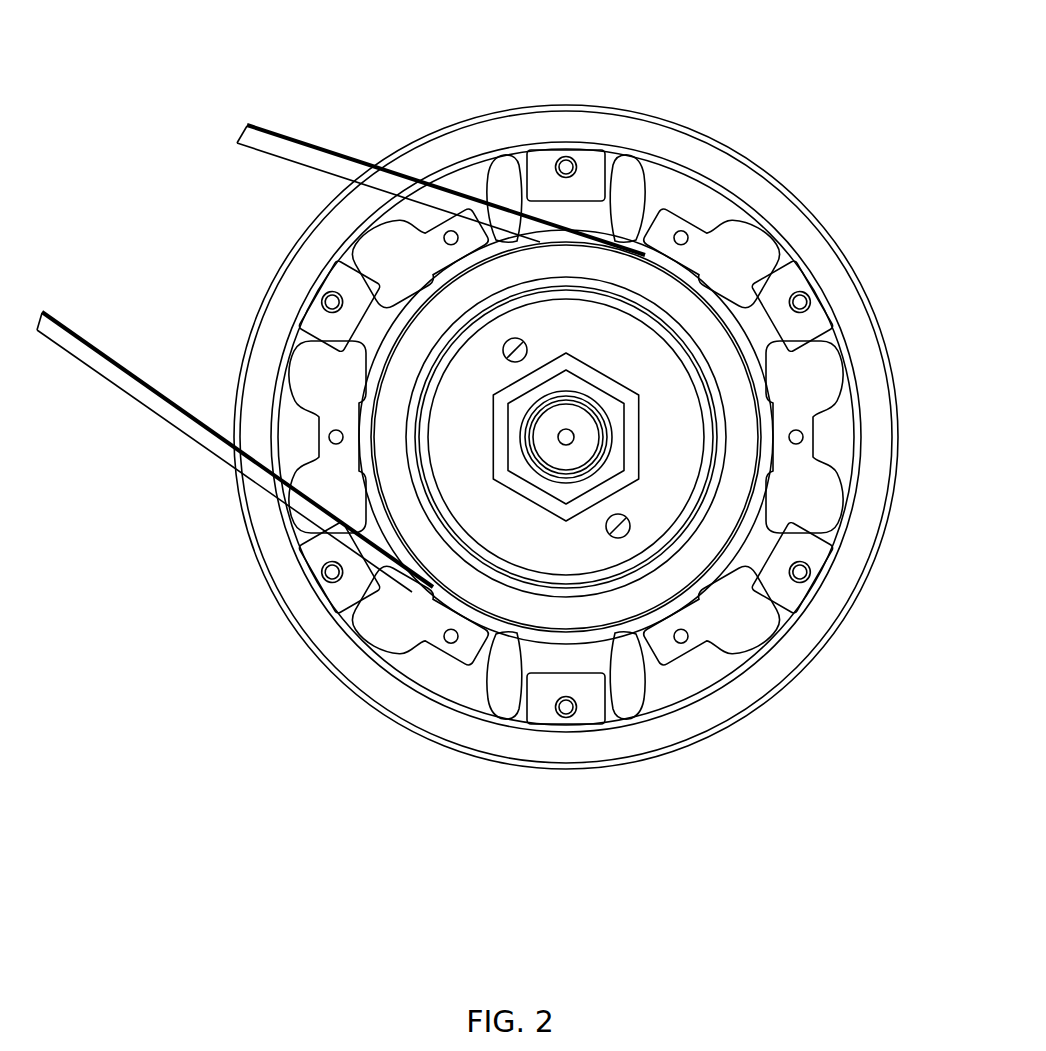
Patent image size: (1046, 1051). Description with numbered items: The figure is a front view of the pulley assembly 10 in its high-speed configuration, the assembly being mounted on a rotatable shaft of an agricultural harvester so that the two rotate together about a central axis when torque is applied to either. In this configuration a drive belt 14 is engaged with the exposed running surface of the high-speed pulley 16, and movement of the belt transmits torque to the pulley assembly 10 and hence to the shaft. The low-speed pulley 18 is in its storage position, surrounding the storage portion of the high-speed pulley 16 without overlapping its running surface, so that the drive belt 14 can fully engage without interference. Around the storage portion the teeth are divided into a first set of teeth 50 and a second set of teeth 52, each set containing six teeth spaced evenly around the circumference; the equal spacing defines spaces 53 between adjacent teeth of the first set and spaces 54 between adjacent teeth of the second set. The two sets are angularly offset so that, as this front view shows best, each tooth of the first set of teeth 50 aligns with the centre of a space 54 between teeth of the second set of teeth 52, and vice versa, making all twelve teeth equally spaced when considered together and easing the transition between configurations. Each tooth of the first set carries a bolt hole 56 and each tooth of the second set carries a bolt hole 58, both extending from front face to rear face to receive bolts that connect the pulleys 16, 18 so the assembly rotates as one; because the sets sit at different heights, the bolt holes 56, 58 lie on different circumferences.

The pulley assembly 10 is at (758, 98).
The drive belt 14 is at (310, 153).
The high-speed pulley 16 is at (515, 606).
The low-speed pulley 18 is at (835, 615).
The first set of teeth 50 is at (712, 238).
The second set of teeth 52 is at (540, 160).
The spaces between the teeth of the first set 53 is at (655, 672).
The spaces between the teeth of the second set 54 is at (822, 366).
The bolt hole 56 is at (804, 437).
The bolt hole 58 is at (571, 160).